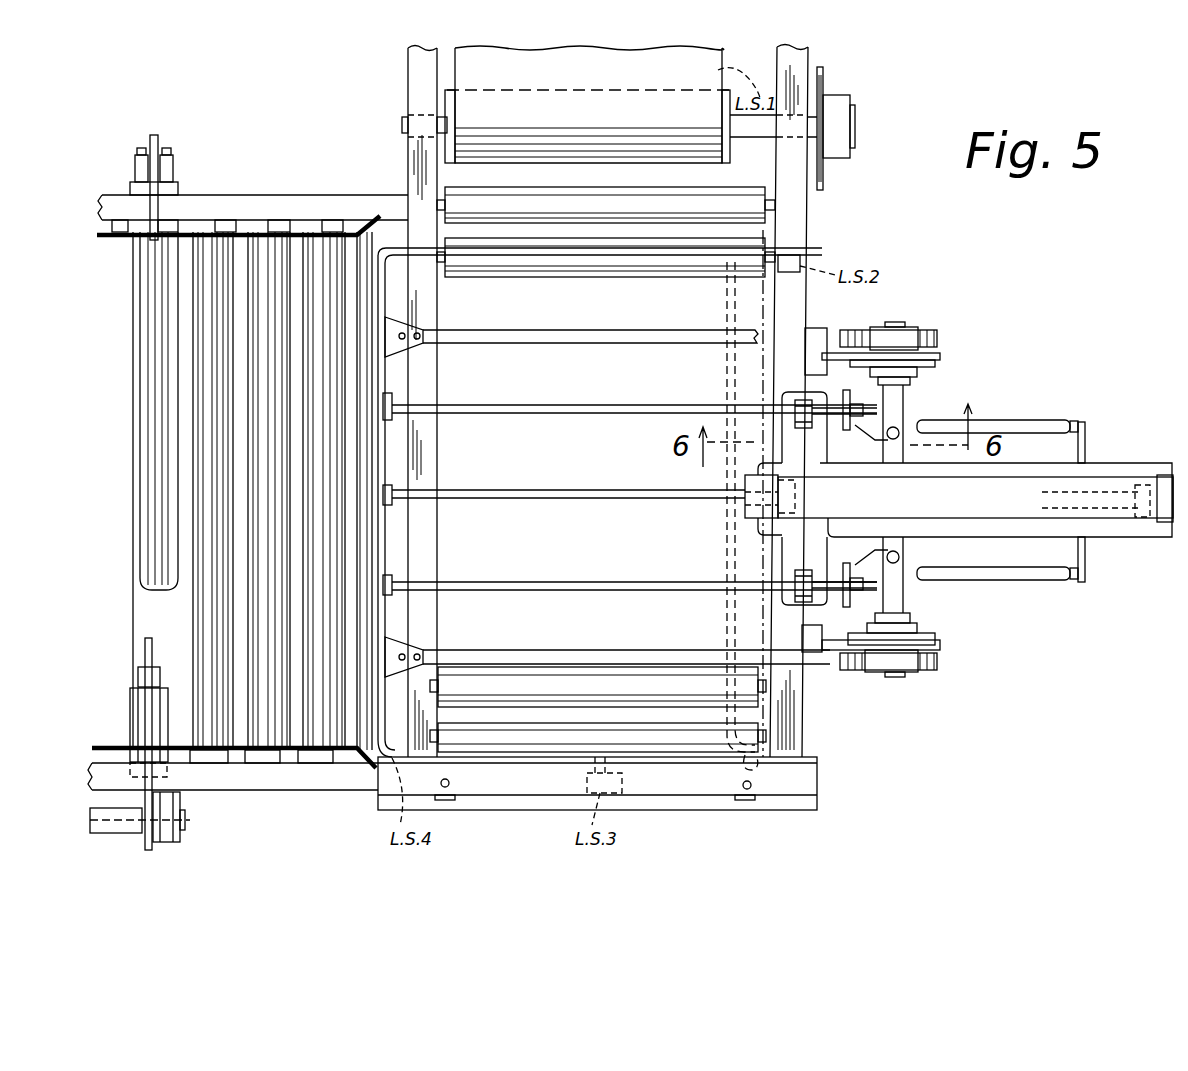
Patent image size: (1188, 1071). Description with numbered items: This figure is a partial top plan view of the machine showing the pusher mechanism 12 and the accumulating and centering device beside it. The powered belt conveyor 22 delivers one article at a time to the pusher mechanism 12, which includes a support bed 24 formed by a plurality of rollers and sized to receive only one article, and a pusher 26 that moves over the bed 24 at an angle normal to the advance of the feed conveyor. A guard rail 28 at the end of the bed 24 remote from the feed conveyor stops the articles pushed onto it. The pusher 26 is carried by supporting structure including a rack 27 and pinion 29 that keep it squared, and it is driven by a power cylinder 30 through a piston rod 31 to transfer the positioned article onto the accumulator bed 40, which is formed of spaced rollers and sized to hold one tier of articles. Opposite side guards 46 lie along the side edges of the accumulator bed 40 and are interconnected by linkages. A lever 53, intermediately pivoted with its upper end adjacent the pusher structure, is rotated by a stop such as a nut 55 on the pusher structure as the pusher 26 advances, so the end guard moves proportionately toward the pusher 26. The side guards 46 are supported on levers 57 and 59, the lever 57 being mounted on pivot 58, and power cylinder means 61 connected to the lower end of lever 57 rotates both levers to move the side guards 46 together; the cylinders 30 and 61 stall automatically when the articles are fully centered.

The pusher mechanism 12 is at (1000, 390).
The belt conveyor 22 is at (712, 72).
The support bed 24 is at (606, 554).
The pusher 26 is at (388, 620).
The rack 27 is at (625, 340).
The guard rail 28 is at (655, 746).
The pinion 29 is at (928, 333).
The power cylinder 30 is at (1118, 520).
The piston rod 31 is at (606, 490).
The accumulator bed 40 is at (160, 422).
The side guards 46 is at (295, 232).
The lever 53 is at (832, 405).
The nut 55 is at (866, 495).
The lever 57 is at (145, 840).
The pivot 58 is at (185, 822).
The lever 59 is at (150, 140).
The power cylinder means 61 is at (142, 720).